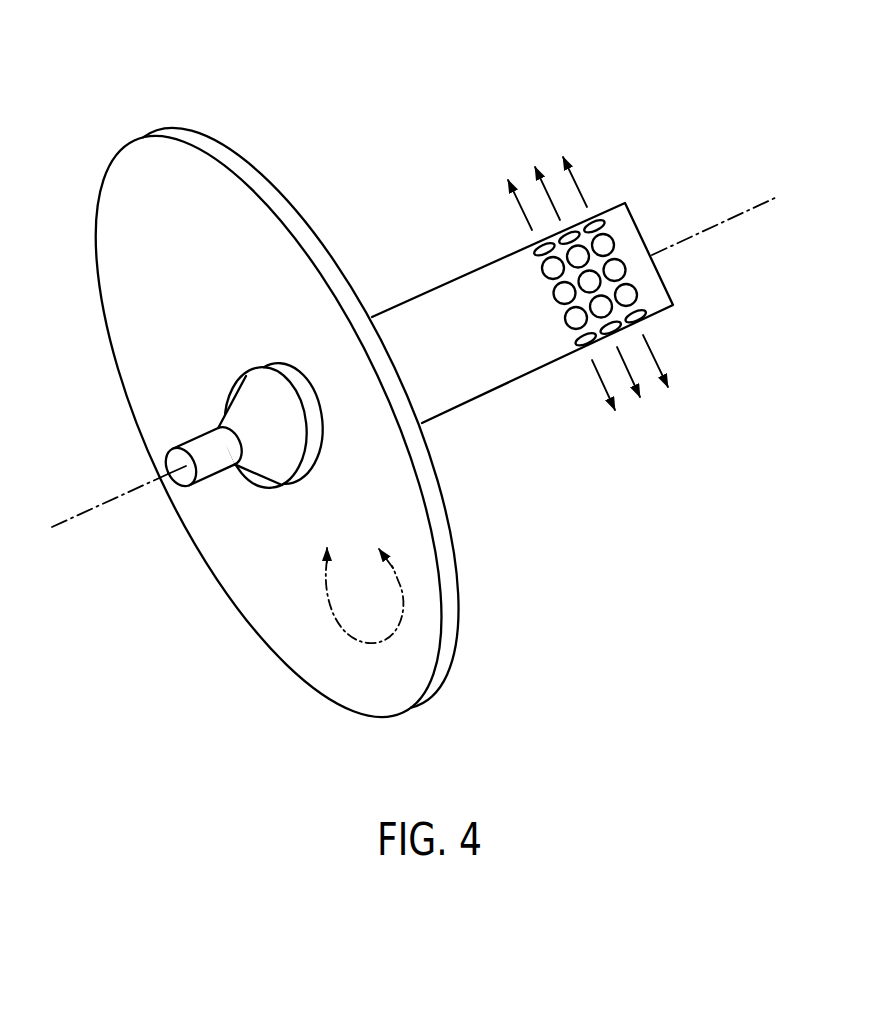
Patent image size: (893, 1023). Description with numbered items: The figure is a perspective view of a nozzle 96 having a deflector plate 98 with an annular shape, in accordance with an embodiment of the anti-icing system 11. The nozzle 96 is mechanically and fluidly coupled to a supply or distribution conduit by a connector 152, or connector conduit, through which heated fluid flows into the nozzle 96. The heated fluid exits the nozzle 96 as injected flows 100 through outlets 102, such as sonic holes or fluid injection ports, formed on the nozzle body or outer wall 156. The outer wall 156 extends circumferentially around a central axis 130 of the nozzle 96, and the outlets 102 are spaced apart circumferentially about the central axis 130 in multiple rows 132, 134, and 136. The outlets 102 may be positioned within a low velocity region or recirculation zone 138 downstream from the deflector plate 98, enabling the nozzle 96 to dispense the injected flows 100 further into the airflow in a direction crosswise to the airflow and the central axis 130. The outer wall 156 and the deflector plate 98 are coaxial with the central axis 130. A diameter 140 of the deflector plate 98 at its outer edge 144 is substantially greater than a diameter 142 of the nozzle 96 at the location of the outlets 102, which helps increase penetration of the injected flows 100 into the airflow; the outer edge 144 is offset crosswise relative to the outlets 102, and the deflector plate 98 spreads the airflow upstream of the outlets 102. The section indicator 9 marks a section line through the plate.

The anti-icing system 11 is at (181, 614).
The nozzle 96 is at (529, 326).
The deflector plate 98 is at (116, 362).
The injected flows 100 is at (576, 183).
The outlets 102 is at (556, 301).
The central axis 130 is at (713, 227).
The row 132 is at (522, 241).
The row 134 is at (621, 336).
The row 136 is at (598, 210).
The recirculation zone 138 is at (341, 230).
The diameter of the deflector plate 140 is at (137, 134).
The diameter of the nozzle 142 is at (454, 416).
The outer edge 144 is at (403, 716).
The connector 152 is at (215, 478).
The outer wall 156 is at (453, 281).
The section line 9- 9 is at (357, 581).